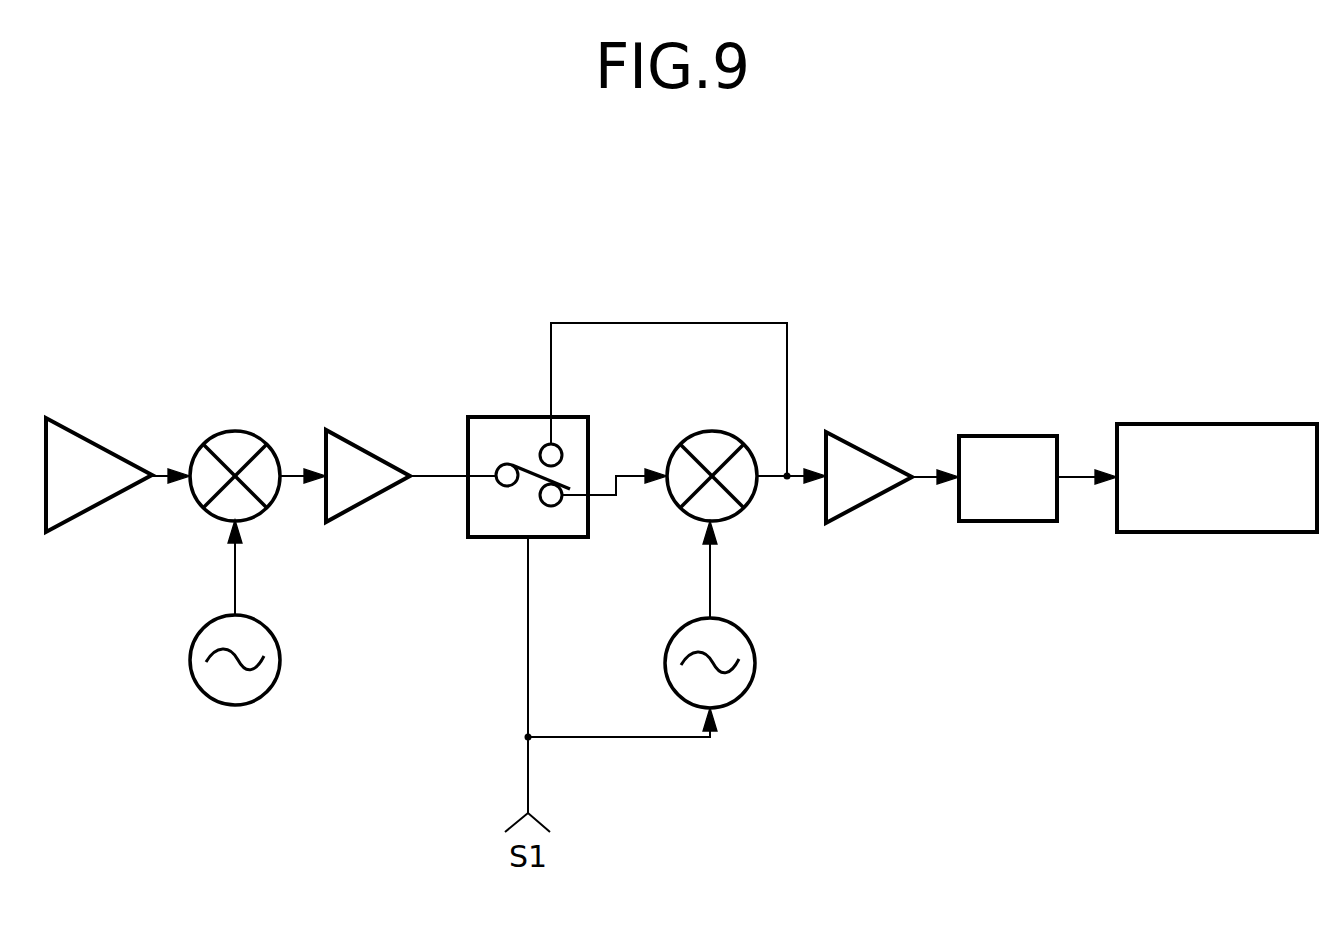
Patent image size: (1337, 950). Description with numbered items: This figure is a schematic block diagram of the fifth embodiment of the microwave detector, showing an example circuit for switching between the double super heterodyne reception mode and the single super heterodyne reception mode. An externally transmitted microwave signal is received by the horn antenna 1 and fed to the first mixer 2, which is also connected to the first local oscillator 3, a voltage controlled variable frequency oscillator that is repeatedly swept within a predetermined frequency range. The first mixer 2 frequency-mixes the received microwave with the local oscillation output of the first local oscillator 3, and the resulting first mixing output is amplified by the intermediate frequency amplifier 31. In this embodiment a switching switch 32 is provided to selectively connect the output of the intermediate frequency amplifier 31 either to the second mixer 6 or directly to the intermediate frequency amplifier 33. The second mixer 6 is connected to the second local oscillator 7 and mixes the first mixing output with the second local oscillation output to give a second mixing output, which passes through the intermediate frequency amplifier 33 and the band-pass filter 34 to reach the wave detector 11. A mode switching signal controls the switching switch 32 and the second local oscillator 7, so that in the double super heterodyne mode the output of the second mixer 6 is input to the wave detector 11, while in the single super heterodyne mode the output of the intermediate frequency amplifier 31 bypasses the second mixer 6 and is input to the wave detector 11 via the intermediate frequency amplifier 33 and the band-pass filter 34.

The horn antenna 1 is at (83, 433).
The first mixer 2 is at (231, 431).
The first local oscillator 3 is at (192, 643).
The intermediate frequency amplifier 31 is at (357, 443).
The switching switch 32 is at (488, 417).
The second mixer 6 is at (710, 433).
The second local oscillator 7 is at (752, 645).
The intermediate frequency amplifier 33 is at (863, 443).
The band-pass filter 34 is at (1008, 436).
The wave detector 11 is at (1212, 424).